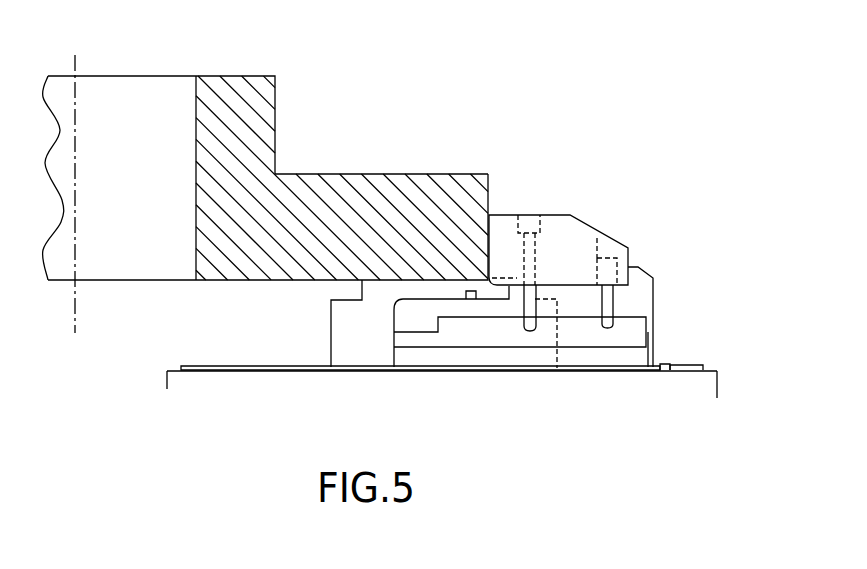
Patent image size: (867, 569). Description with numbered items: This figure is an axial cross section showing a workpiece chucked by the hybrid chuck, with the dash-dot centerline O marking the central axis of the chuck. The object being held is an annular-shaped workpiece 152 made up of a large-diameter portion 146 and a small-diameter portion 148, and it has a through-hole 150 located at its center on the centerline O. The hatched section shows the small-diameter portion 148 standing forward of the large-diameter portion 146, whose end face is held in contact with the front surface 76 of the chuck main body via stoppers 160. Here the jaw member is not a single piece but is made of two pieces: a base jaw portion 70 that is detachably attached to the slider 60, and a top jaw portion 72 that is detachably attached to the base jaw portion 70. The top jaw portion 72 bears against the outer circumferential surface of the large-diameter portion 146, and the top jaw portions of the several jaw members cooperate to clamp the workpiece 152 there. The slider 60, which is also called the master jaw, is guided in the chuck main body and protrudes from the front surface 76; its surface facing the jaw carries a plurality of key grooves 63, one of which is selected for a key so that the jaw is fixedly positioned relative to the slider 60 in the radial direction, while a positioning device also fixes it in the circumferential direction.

The optical axis / centerline O is at (76, 72).
The through-hole 150 is at (196, 98).
The small-diameter portion 148 is at (260, 115).
The annular-shaped workpiece 152 is at (356, 164).
The large-diameter portion 146 is at (441, 176).
The top jaw portion 72 is at (577, 230).
The base jaw portion 70 is at (647, 283).
The stoppers 160 is at (347, 348).
The front surface 76 is at (200, 366).
The key grooves 63 is at (665, 365).
The slider 60 is at (689, 363).